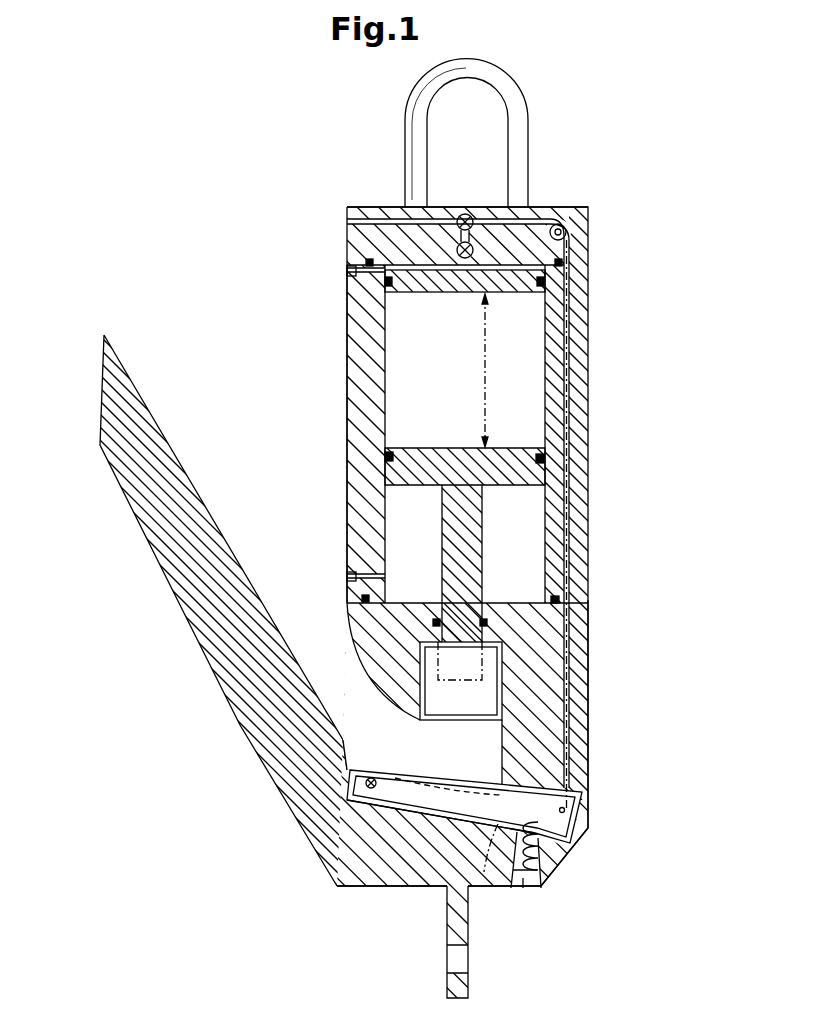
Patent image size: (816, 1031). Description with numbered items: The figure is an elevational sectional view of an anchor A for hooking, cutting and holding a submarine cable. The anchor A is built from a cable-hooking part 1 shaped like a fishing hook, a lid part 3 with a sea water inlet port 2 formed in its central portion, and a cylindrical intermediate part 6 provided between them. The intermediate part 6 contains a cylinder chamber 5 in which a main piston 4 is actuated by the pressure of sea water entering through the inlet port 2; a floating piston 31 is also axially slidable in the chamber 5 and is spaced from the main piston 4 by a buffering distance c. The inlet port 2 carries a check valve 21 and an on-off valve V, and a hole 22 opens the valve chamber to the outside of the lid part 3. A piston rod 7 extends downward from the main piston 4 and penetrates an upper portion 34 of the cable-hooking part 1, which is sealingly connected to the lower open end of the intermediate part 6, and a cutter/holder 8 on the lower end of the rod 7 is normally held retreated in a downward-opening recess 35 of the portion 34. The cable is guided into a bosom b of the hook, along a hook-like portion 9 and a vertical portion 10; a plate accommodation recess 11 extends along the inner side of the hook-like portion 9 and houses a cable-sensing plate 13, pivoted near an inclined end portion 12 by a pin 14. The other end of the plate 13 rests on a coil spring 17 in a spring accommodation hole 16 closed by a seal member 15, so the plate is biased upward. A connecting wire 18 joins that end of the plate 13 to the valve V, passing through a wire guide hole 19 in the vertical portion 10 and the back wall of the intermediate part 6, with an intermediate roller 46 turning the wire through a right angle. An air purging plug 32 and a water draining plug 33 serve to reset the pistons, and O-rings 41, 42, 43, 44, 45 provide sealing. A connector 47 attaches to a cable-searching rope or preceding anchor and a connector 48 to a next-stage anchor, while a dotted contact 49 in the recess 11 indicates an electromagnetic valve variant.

The cable-hooking part 1 is at (578, 640).
The sea water inlet port 2 is at (465, 213).
The lid part 3 is at (372, 206).
The main piston 4 is at (445, 448).
The cylinder chamber 5 is at (385, 366).
The cylindrical intermediate part 6 is at (347, 352).
The piston rod 7 is at (478, 521).
The cutter/holder 8 is at (438, 722).
The hook-like portion 9 is at (420, 862).
The vertical portion 10 is at (576, 774).
The plate accommodation recess 11 is at (430, 810).
The inclined end portion 12 is at (190, 505).
The cable-sensing plate 13 is at (466, 790).
The pin 14 is at (373, 780).
The seal member 15 is at (523, 884).
The spring accommodation hole 16 is at (562, 866).
The coil spring 17 is at (584, 828).
The connecting wire 18 is at (567, 718).
The wire guide hole 19 is at (567, 660).
The check valve 21 is at (457, 245).
The hole 22 is at (347, 220).
The floating piston 31 is at (440, 293).
The air purging plug 32 is at (347, 575).
The water draining plug 33 is at (347, 270).
The upper portion 34 is at (385, 655).
The recess 35 is at (502, 682).
The O-ring 41 is at (366, 262).
The O-ring 42 is at (386, 292).
The O-ring 43 is at (389, 452).
The O-ring 44 is at (369, 598).
The O-ring 45 is at (481, 626).
The intermediate roller 46 is at (562, 225).
The connector 47 is at (488, 90).
The connector 48 is at (468, 962).
The contact 49 is at (487, 874).
The anchor A is at (293, 161).
The bosom b is at (331, 668).
The buffering distance c is at (487, 370).
The on-off valve V is at (478, 222).